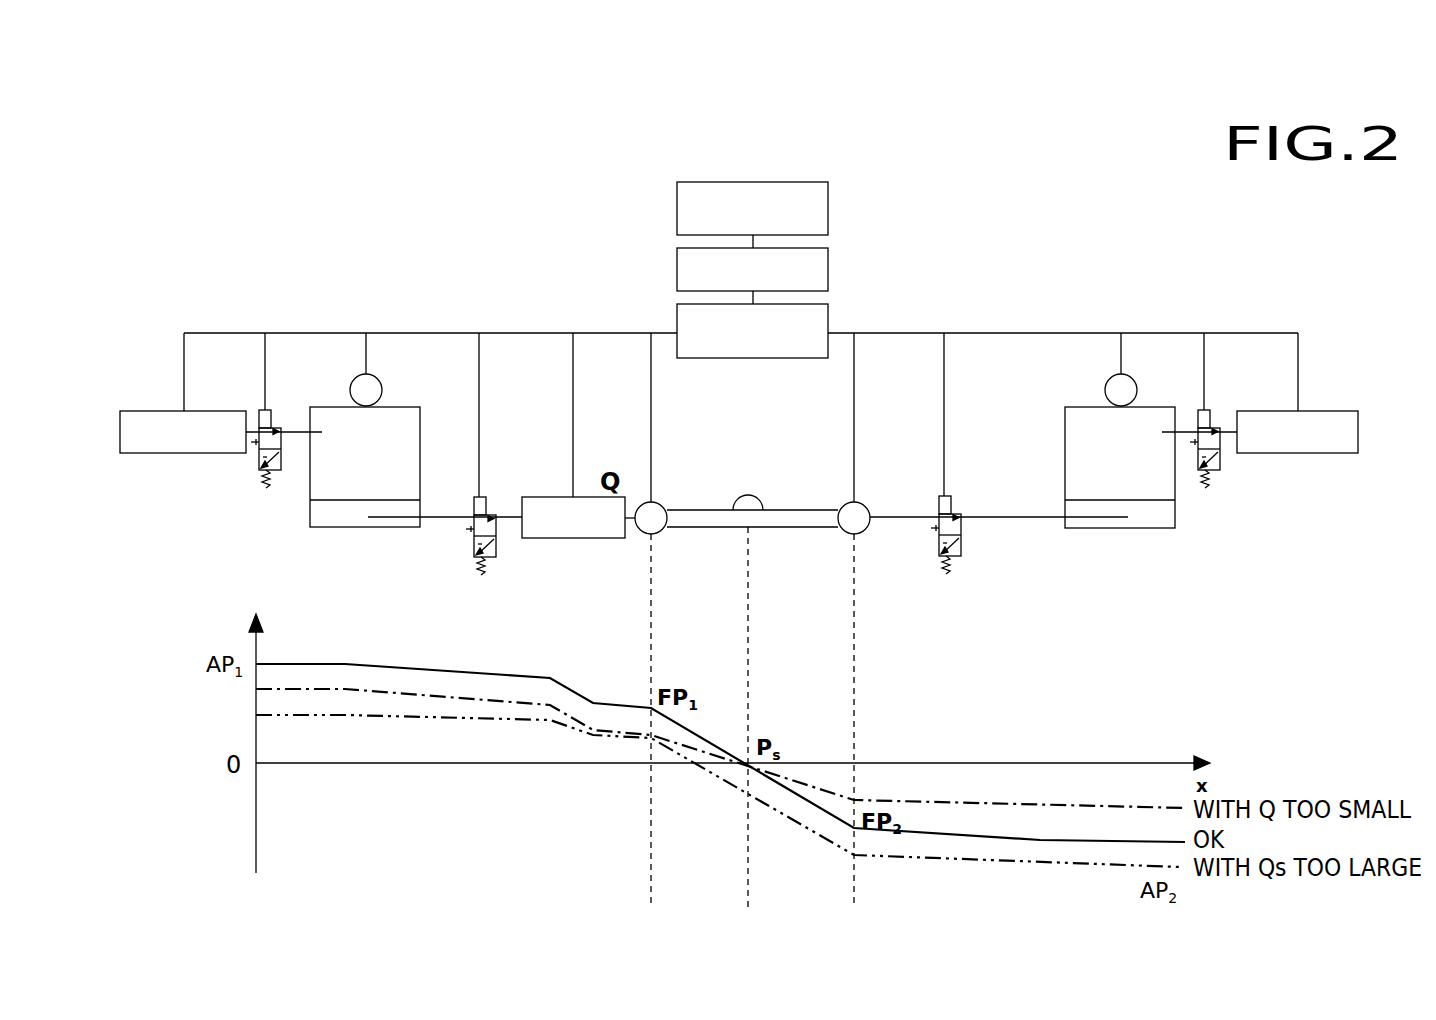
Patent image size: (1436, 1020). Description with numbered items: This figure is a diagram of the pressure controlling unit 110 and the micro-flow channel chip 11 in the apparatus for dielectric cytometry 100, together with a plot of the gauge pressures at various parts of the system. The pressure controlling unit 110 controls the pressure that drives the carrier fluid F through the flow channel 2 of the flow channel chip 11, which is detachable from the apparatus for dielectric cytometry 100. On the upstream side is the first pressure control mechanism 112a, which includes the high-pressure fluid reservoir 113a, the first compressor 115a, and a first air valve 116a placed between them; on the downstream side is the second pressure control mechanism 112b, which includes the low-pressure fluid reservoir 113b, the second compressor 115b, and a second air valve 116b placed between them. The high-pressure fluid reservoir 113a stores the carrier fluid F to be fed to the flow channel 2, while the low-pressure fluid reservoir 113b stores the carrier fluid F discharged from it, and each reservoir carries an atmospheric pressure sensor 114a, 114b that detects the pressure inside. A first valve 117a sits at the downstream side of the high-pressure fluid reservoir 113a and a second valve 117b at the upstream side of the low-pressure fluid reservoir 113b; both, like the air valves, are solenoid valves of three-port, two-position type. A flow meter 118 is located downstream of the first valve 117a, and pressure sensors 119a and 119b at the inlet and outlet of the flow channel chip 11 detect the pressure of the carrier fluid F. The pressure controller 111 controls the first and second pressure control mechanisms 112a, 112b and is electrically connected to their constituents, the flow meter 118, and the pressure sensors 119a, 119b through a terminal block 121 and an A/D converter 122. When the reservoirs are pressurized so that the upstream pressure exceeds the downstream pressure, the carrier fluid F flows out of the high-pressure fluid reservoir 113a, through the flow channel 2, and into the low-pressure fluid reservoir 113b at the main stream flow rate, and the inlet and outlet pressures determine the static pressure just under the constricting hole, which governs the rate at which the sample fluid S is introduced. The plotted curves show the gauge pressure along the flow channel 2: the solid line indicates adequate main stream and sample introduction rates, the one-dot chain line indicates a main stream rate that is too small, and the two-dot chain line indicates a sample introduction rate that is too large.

The apparatus for dielectric cytometry 100 is at (755, 158).
The pressure controlling unit 110 is at (920, 210).
The pressure controller 111 is at (830, 197).
The A/D converter 122 is at (830, 262).
The terminal block 121 is at (830, 317).
The first pressure control mechanism 112a is at (316, 292).
The second pressure control mechanism 112b is at (1166, 292).
The first compressor 115a is at (146, 410).
The second compressor 115b is at (1336, 410).
The first air valve 116a is at (272, 418).
The second air valve 116b is at (1212, 416).
The atmospheric pressure sensor 114a is at (383, 390).
The atmospheric pressure sensor 114b is at (1105, 390).
The high-pressure fluid reservoir 113a is at (310, 487).
The low-pressure fluid reservoir 113b is at (1175, 485).
The first valve 117a is at (468, 551).
The second valve 117b is at (964, 548).
The flow meter 118 is at (553, 538).
The pressure sensor 119a is at (645, 532).
The pressure sensor 119b is at (861, 532).
The micro-flow channel chip 11 is at (800, 528).
The flow channel 2 is at (511, 515).
The sample fluid S is at (768, 506).
The carrier fluid F is at (348, 517).